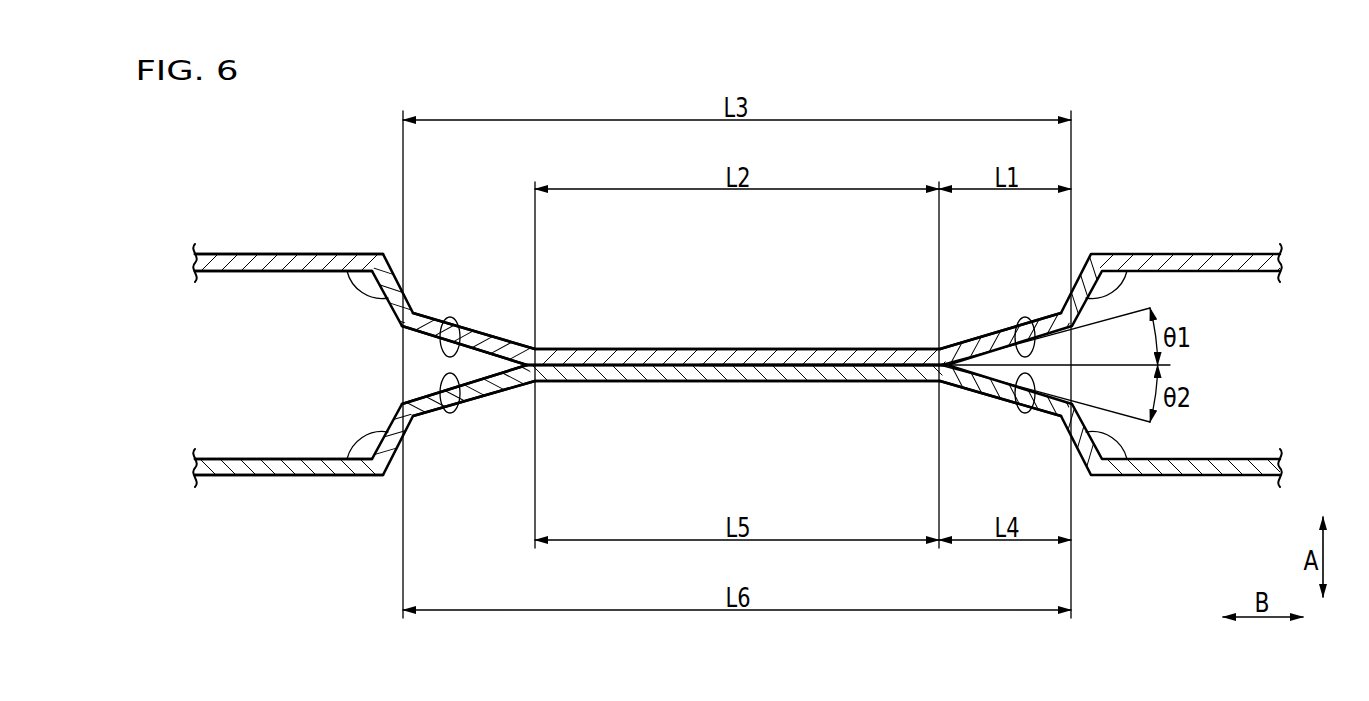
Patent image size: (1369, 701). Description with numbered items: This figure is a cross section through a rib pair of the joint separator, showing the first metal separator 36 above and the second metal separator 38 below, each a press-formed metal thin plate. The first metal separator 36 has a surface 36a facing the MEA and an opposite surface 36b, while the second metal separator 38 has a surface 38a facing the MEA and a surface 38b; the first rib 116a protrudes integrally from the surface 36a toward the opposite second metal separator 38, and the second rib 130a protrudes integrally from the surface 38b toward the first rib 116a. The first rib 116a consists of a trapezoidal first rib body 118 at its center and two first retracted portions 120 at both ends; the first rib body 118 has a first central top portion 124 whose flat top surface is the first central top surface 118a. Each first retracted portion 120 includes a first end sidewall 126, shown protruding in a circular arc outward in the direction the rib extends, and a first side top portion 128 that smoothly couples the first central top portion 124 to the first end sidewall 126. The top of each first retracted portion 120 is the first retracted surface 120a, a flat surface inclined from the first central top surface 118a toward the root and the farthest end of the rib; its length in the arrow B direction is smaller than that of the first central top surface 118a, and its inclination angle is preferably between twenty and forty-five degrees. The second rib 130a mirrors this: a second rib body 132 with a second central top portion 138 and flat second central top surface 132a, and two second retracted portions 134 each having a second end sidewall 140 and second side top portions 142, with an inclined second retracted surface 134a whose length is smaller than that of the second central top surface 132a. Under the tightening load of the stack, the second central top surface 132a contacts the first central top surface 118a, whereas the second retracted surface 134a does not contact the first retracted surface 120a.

The first metal separator 36 is at (186, 249).
The surface of first metal separator 36a is at (240, 272).
The surface of first metal separator 36b is at (253, 253).
The second metal separator 38 is at (186, 481).
The surface of second metal separator 38a is at (242, 458).
The surface of second metal separator 38b is at (258, 477).
The first rib 116a is at (417, 341).
The first rib body 118 is at (714, 347).
The first central top surface 118a is at (802, 368).
The first retracted portion 120 is at (502, 334).
The first retracted surface 120a is at (441, 340).
The first central top portion 124 is at (665, 351).
The first end sidewall 126 is at (347, 271).
The first side top portion 128 is at (482, 338).
The second rib 130a is at (417, 388).
The second rib body 132 is at (719, 384).
The second central top surface 132a is at (757, 365).
The second retracted portion 134 is at (502, 396).
The second retracted surface 134a is at (441, 390).
The second central top portion 138 is at (663, 377).
The second end sidewall 140 is at (481, 400).
The second side top portion 142 is at (347, 459).